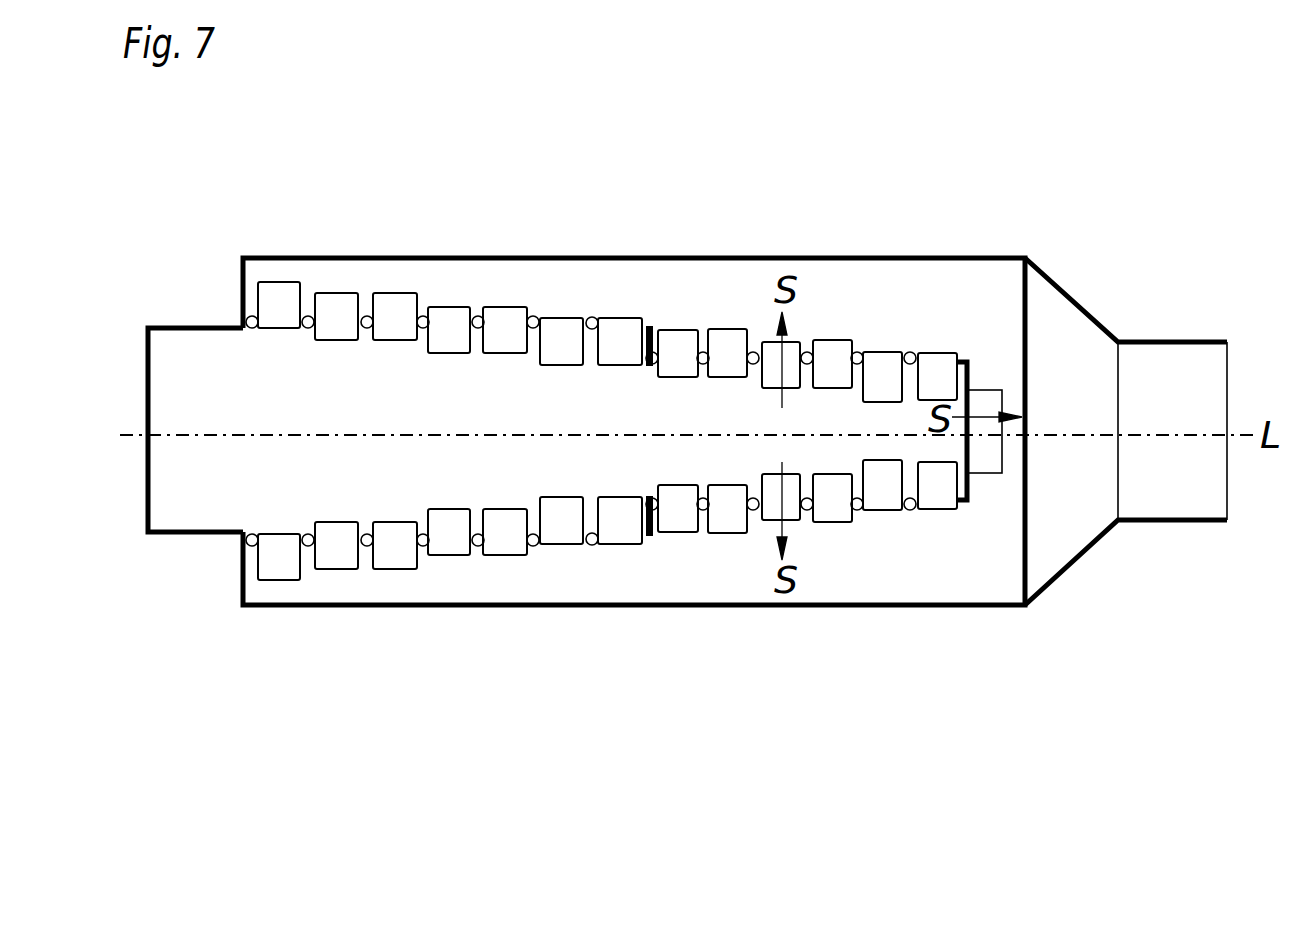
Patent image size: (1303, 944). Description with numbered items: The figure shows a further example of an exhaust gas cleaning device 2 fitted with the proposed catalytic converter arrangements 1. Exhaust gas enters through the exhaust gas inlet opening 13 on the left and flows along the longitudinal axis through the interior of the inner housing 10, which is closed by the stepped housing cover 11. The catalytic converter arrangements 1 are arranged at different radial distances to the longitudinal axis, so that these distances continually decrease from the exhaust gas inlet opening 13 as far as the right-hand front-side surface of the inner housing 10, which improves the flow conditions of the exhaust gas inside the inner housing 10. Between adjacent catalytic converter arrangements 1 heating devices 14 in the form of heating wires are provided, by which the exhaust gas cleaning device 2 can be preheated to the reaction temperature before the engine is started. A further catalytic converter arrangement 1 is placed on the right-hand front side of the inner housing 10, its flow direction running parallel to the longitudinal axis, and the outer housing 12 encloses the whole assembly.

The catalytic converter arrangement 1 is at (282, 298).
The exhaust gas cleaning device 2 is at (1172, 300).
The inner housing 10 is at (970, 376).
The stepped housing cover 11 is at (969, 370).
The housing 12 is at (595, 258).
The exhaust gas inlet opening 13 is at (278, 382).
The heating device 14 is at (367, 316).